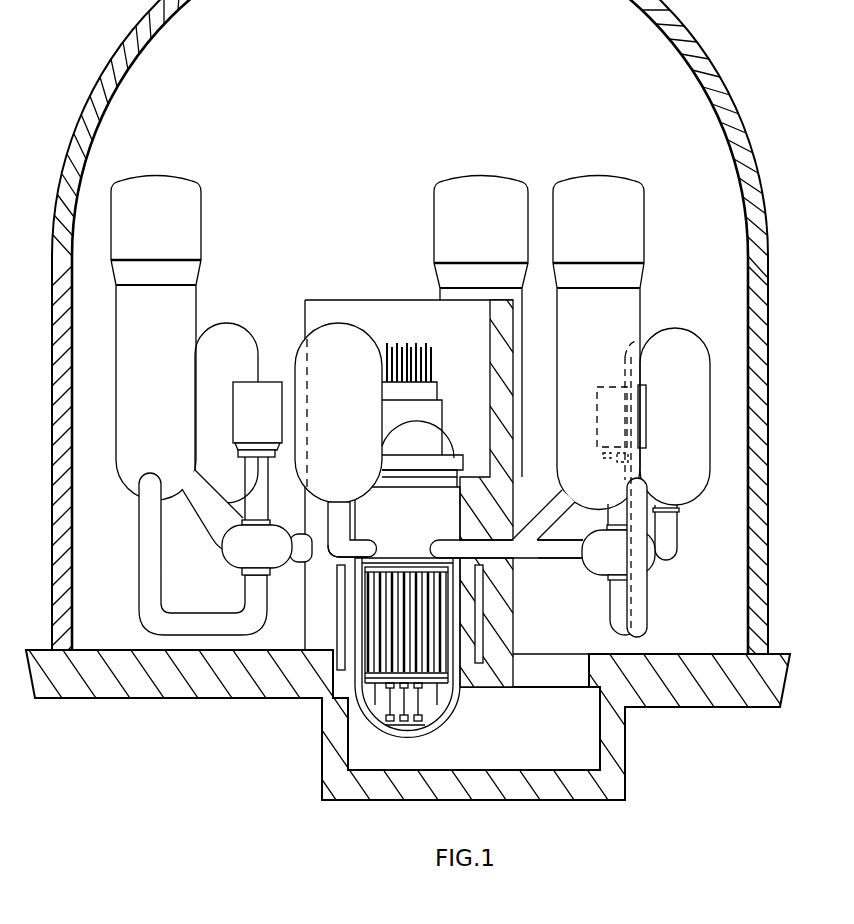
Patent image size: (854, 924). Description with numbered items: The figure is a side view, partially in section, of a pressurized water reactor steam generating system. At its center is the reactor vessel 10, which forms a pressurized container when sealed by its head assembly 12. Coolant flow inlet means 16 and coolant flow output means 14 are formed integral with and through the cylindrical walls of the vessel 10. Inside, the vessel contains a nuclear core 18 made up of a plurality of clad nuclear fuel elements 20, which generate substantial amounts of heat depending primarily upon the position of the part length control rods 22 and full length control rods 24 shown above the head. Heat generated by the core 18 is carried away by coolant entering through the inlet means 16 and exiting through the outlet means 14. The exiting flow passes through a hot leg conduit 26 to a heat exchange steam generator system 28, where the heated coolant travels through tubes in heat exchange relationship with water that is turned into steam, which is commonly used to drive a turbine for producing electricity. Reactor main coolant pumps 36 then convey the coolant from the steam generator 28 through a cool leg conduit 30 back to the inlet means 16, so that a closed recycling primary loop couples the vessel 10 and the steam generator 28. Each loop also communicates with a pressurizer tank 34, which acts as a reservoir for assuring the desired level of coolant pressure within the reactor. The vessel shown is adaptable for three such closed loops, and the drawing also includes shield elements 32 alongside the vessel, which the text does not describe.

The vessel 10 is at (393, 517).
The head assembly 12 is at (446, 442).
The coolant flow output means 14 is at (445, 542).
The coolant flow inlet means 16 is at (366, 540).
The nuclear core 18 is at (390, 640).
The clad nuclear fuel elements 20 is at (432, 656).
The part length control rods 22 is at (400, 345).
The full length control rods 24 is at (418, 345).
The hot leg conduit 26 is at (205, 502).
The heat exchange steam generator system 28 is at (138, 209).
The cool leg conduit 30 is at (316, 562).
The neutron shields 32 is at (337, 603).
The pressurizer tank 34 is at (237, 368).
The reactor main coolant pumps 36 is at (242, 558).